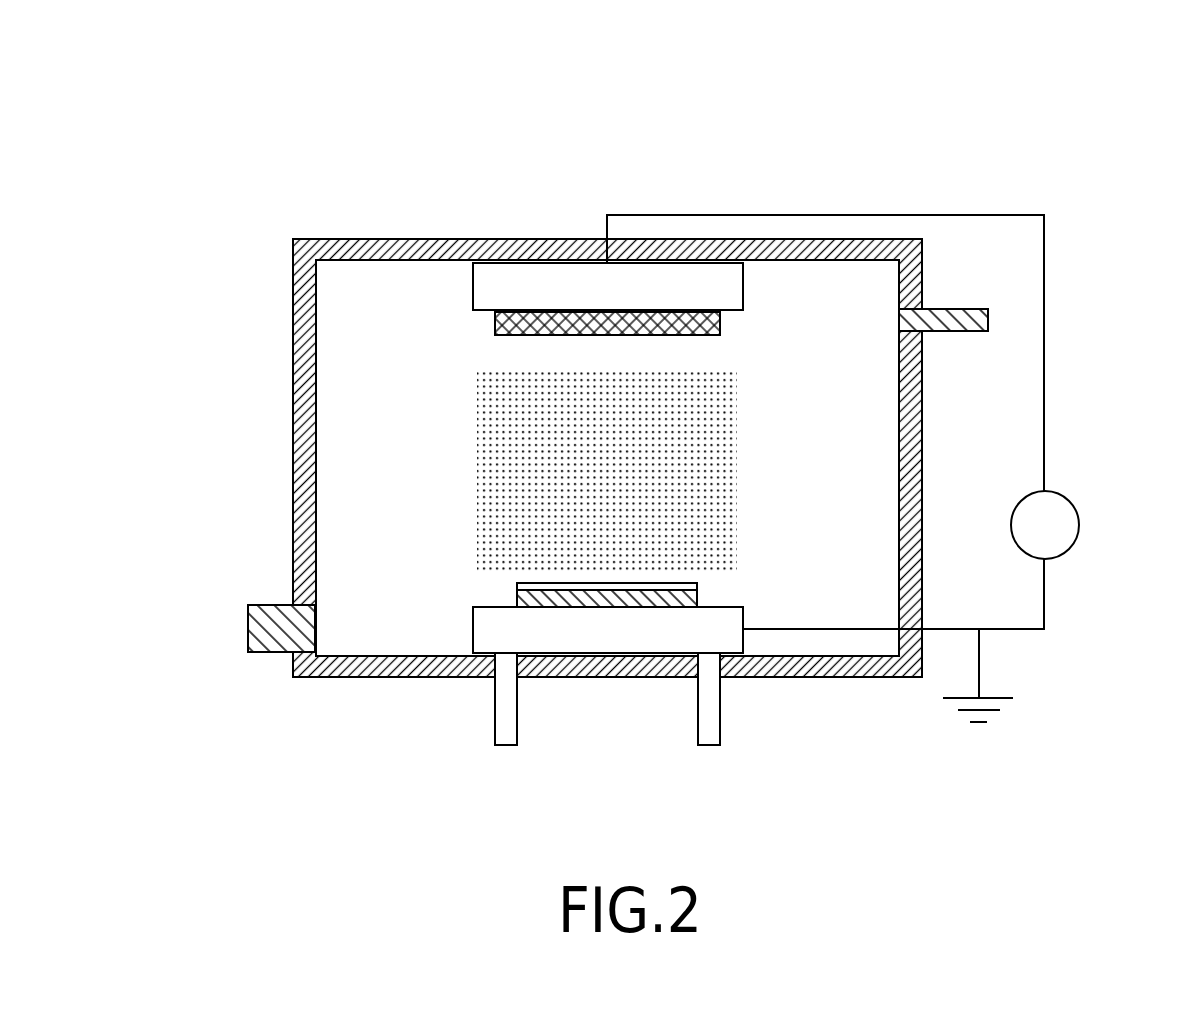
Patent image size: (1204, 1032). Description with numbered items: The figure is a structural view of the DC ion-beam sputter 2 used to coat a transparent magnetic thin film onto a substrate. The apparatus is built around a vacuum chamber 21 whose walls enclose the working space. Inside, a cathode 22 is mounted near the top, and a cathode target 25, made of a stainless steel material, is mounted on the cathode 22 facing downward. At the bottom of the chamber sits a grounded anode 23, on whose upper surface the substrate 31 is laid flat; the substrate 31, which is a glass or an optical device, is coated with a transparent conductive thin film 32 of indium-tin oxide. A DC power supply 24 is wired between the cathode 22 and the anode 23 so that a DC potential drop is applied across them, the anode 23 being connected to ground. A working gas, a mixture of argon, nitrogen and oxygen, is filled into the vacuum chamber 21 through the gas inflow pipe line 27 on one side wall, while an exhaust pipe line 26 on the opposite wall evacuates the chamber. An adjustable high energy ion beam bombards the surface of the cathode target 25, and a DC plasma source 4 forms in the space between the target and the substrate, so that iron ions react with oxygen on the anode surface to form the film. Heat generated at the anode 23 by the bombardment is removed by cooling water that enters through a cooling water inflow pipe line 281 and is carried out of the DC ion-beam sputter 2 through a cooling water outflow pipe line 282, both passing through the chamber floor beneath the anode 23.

The DC ion-beam sputter 2 is at (692, 126).
The vacuum chamber 21 is at (430, 239).
The cathode 22 is at (473, 291).
The grounded anode 23 is at (473, 632).
The DC power supply 24 is at (1080, 527).
The cathode target 25 is at (495, 331).
The exhaust pipe line 26 is at (248, 630).
The gas inflow pipe line 27 is at (955, 331).
The DC plasma source 4 is at (470, 458).
The substrate 31 is at (517, 598).
The transparent conductive thin film 32 is at (697, 585).
The cooling water inflow pipe line 281 is at (495, 708).
The cooling water outflow pipe line 282 is at (720, 708).